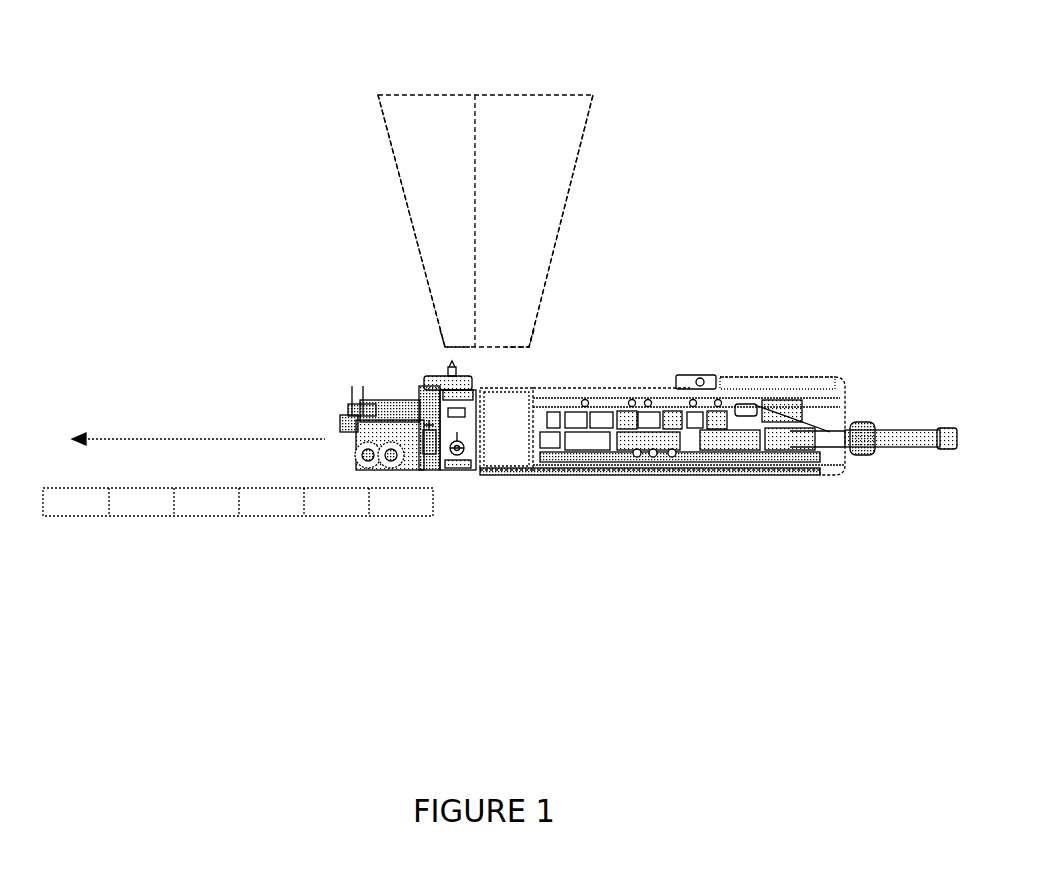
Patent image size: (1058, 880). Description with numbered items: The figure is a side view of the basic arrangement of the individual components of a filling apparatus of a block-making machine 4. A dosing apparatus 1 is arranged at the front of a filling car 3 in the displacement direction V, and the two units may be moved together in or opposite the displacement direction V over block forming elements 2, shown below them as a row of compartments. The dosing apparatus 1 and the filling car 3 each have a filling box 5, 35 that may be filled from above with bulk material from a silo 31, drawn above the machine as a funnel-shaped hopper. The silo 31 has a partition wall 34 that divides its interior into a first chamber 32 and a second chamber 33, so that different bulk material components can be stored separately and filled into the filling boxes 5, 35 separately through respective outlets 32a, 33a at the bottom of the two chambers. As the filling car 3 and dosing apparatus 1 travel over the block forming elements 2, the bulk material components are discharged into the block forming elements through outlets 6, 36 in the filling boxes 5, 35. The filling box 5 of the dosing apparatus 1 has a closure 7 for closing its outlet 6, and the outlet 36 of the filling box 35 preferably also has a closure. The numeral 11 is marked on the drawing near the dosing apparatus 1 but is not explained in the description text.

The dosing apparatus 1 is at (415, 366).
The block forming elements 2 is at (262, 517).
The filling car 3 is at (652, 510).
The block-making machine 4 is at (253, 182).
The filling box 5 is at (467, 462).
The outlet 6 is at (433, 468).
The closure 7 is at (425, 470).
The material receiving tower 11 is at (479, 390).
The silo 31 is at (518, 179).
The first chamber 32 is at (538, 243).
The outlet 32a is at (500, 347).
The second chamber 33 is at (432, 255).
The outlet 33a is at (462, 347).
The partition wall 34 is at (476, 120).
The filling box 35 is at (507, 417).
The outlet 36 is at (517, 473).
The displacement direction V is at (135, 439).